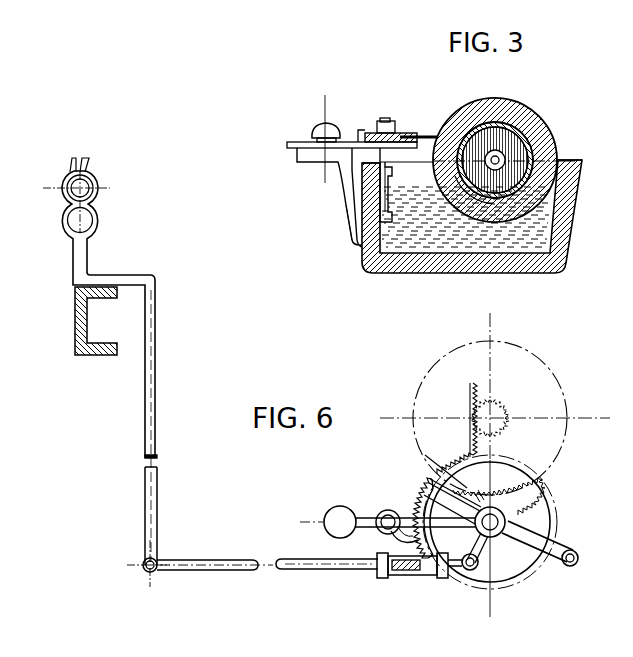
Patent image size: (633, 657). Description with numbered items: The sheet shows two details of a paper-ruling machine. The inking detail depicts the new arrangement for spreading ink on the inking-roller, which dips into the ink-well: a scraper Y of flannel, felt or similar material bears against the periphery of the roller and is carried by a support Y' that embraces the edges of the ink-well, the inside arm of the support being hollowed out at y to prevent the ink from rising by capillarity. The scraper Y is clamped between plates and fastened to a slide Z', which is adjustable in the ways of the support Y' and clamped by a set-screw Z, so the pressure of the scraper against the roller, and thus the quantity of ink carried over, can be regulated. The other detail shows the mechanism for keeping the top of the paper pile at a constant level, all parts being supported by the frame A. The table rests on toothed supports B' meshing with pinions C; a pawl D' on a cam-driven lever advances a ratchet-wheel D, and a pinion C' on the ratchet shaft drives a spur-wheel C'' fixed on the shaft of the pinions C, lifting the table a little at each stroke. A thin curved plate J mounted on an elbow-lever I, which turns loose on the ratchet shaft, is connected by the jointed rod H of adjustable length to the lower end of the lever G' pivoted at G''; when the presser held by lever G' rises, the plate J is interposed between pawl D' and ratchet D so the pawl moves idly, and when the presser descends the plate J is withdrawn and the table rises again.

In FIG. 3, the set-screw Z is at (326, 124).
In FIG. 3, the slide Z' is at (387, 125).
In FIG. 3, the scraper Y is at (362, 171).
In FIG. 3, the support Y' is at (349, 185).
In FIG. 3, the hollowed-out portion of inside arm y is at (368, 203).
In FIG. 6, the pivot of lever G' G'' is at (92, 308).
In FIG. 6, the frame A is at (82, 322).
In FIG. 6, the lever G' is at (161, 427).
In FIG. 6, the jointed rod H is at (311, 562).
In FIG. 6, the pawl D' is at (382, 514).
In FIG. 6, the thin curved plate J is at (416, 512).
In FIG. 6, the ratchet-wheel D is at (419, 550).
In FIG. 6, the elbow-lever I is at (484, 552).
In FIG. 6, the pinion C' is at (500, 536).
In FIG. 6, the pinions C is at (495, 386).
In FIG. 6, the toothed supports B' is at (457, 428).
In FIG. 6, the spur-wheel C'' is at (500, 418).